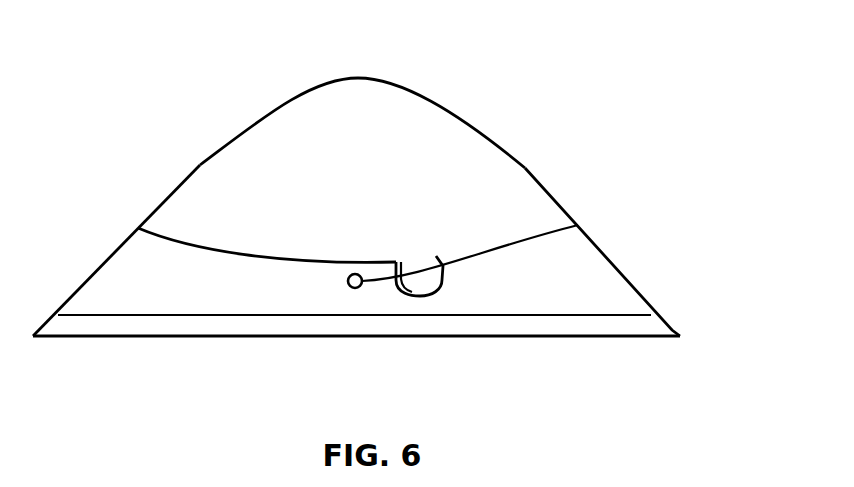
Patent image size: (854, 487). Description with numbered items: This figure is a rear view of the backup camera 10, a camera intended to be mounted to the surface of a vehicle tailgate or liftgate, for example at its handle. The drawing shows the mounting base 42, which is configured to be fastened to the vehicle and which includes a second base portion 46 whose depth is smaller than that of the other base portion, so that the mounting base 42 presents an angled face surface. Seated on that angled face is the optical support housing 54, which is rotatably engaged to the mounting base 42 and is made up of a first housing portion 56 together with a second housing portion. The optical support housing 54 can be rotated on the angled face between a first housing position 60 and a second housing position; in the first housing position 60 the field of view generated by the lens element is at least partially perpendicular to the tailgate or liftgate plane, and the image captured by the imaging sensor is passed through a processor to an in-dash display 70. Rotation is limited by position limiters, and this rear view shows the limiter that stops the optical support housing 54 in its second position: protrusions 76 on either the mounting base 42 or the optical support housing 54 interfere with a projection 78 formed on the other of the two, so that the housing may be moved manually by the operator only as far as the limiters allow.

The backup camera 10 is at (371, 212).
The optical support housing 54 is at (418, 132).
The first housing position 60 is at (356, 182).
The mounting base 42 is at (529, 345).
The second base portion 46 is at (577, 292).
The first housing portion 56 is at (210, 252).
The protrusions 76 is at (436, 256).
The projection 78 is at (404, 284).
The in-dash display 70 is at (340, 282).